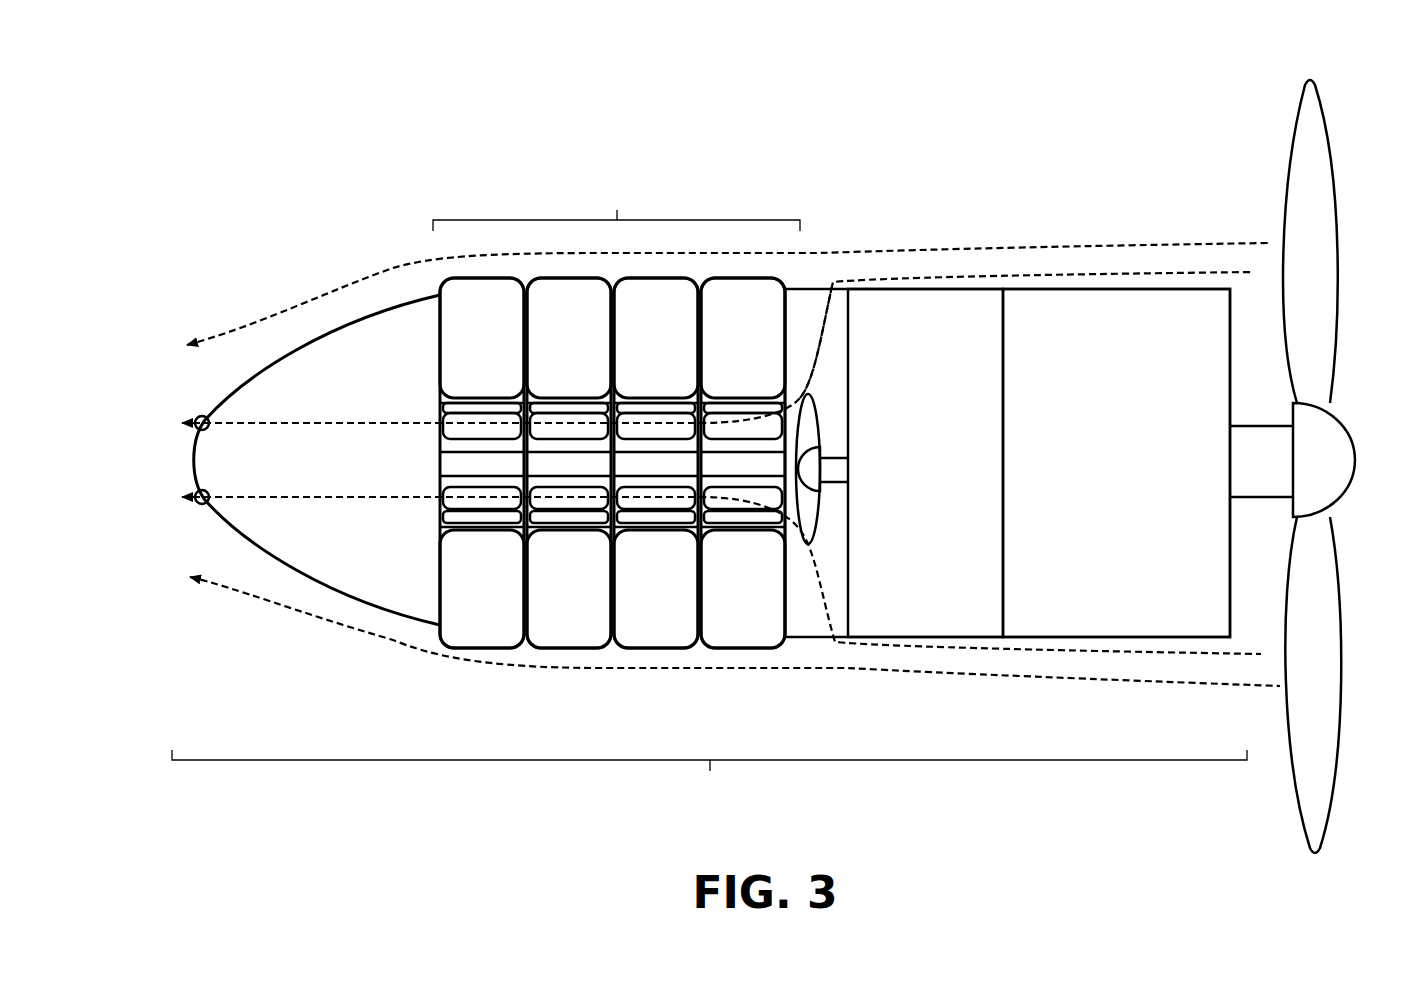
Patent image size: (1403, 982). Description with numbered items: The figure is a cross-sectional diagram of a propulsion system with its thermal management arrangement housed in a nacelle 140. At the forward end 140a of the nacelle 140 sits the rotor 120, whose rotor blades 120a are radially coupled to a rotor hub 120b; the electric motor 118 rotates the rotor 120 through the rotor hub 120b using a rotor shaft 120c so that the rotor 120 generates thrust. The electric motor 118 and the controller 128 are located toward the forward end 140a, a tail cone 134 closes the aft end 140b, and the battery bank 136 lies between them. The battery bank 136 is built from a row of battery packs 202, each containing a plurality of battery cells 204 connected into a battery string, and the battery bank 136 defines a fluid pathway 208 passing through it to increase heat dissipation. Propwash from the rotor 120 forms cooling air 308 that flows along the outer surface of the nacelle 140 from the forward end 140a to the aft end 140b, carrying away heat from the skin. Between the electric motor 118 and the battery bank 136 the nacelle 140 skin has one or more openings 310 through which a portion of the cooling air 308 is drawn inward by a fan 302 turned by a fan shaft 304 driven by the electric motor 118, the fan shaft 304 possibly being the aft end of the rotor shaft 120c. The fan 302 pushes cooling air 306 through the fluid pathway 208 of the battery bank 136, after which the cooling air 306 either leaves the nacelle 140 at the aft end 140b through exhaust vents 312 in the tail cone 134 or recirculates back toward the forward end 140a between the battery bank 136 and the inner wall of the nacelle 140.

The electric motor 118 is at (1116, 463).
The rotor 120 is at (1280, 478).
The rotor blades 120a is at (1305, 857).
The rotor hub 120b is at (1340, 418).
The rotor shaft 120c is at (1270, 500).
The controller 128 is at (925, 463).
The tail cone 134 is at (201, 413).
The battery bank 136 is at (616, 206).
The nacelle 140 is at (709, 782).
The forward end of the nacelle 140a is at (1208, 212).
The aft end of the nacelle 140b is at (362, 220).
The battery packs 202 is at (483, 648).
The battery cells 204 is at (612, 463).
The fluid pathway 208 is at (427, 403).
The fan 302 is at (815, 544).
The fan shaft 304 is at (843, 456).
The cooling air 306 is at (362, 427).
The cooling air 308 is at (310, 287).
The openings 310 is at (813, 284).
The exhaust vents 312 is at (168, 450).